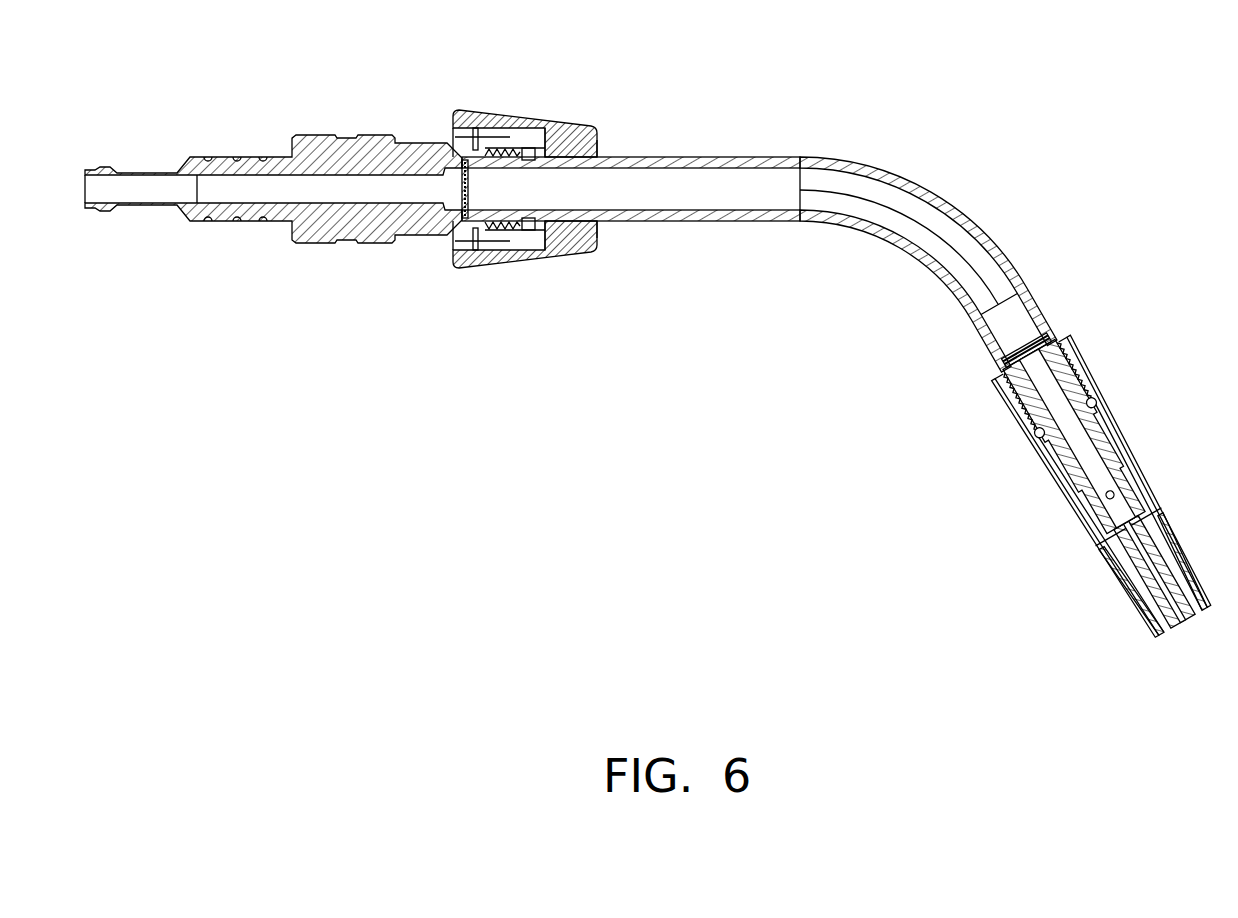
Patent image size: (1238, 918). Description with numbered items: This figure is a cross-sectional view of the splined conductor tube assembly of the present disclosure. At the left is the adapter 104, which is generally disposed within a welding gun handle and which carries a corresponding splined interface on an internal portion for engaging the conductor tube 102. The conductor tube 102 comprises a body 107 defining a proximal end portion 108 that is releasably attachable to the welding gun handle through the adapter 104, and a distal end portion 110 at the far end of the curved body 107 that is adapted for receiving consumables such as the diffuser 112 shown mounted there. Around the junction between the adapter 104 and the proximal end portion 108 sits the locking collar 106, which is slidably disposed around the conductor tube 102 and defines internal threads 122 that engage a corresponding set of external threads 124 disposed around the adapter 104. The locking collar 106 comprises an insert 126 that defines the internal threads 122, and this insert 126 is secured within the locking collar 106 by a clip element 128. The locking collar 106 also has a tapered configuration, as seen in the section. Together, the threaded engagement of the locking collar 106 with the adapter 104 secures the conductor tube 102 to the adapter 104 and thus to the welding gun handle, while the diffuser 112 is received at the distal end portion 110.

The conductor tube 102 is at (868, 132).
The adapter 104 is at (372, 158).
The locking collar 106 is at (538, 122).
The body 107 is at (903, 187).
The proximal end portion 108 is at (571, 292).
The distal end portion 110 is at (1065, 302).
The diffuser 112 is at (1055, 442).
The internal threads 122 is at (509, 150).
The external threads 124 is at (495, 140).
The insert 126 is at (565, 122).
The clip element 128 is at (472, 245).